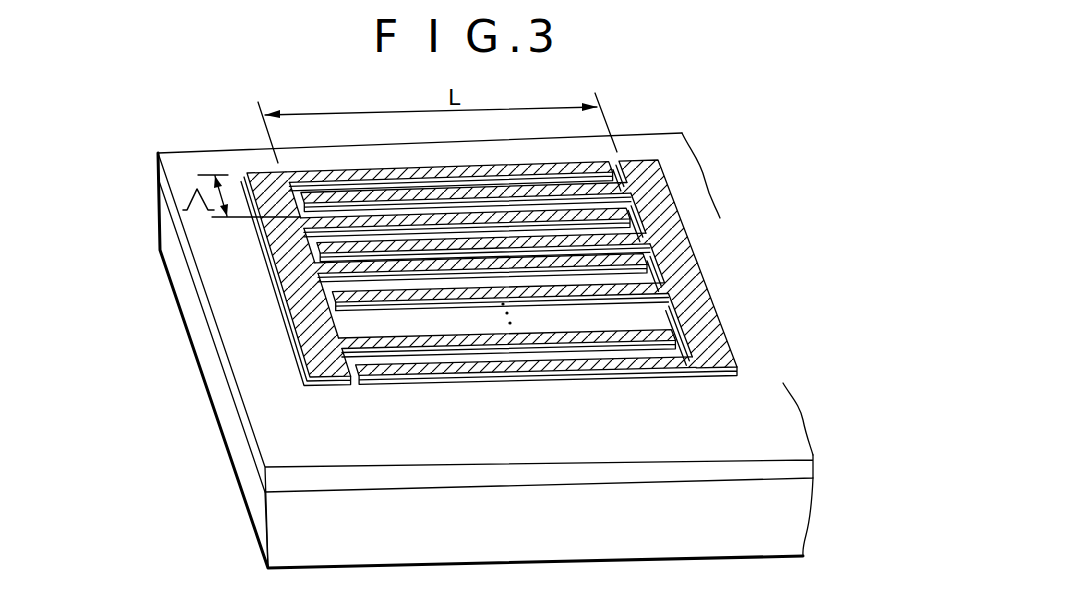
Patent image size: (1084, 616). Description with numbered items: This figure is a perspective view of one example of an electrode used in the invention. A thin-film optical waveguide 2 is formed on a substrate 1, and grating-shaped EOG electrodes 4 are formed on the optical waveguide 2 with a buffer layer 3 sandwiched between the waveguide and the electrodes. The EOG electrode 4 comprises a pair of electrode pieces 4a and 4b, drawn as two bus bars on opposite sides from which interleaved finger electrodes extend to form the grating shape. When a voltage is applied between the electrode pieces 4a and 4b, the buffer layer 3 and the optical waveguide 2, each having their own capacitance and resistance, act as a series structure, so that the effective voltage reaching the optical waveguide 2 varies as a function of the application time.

The substrate 1 is at (280, 527).
The thin-film optical waveguide 2 is at (275, 477).
The buffer layer 3 is at (334, 386).
The grating-shaped EOG electrodes 4 is at (509, 297).
The electrode piece 4a is at (315, 344).
The electrode piece 4b is at (713, 300).